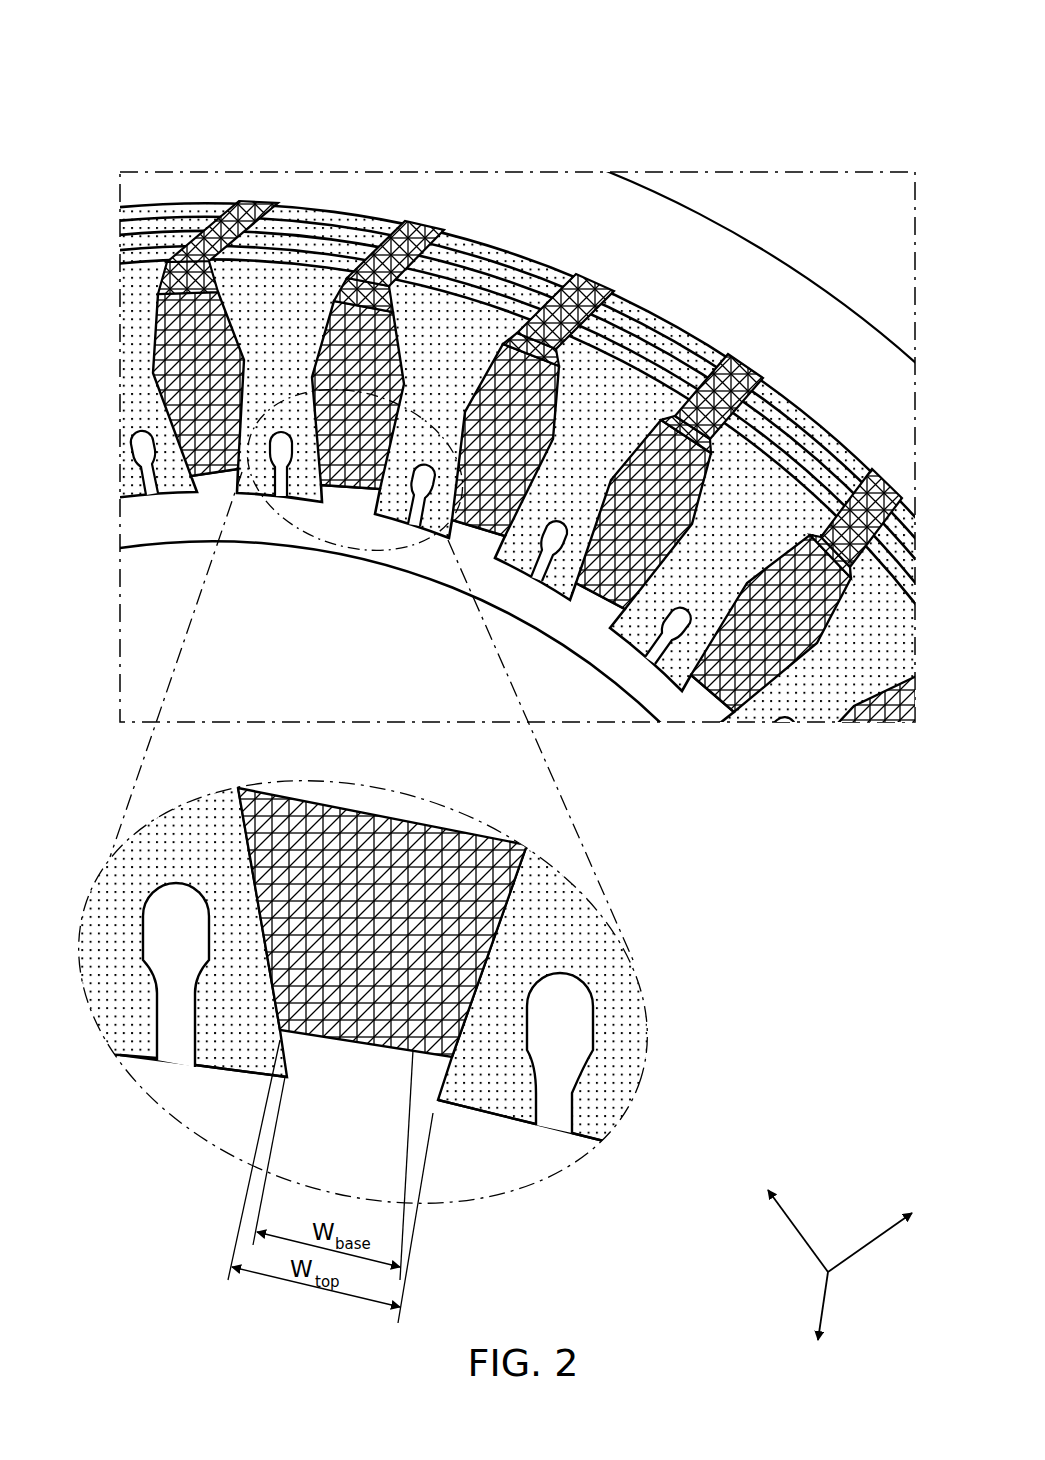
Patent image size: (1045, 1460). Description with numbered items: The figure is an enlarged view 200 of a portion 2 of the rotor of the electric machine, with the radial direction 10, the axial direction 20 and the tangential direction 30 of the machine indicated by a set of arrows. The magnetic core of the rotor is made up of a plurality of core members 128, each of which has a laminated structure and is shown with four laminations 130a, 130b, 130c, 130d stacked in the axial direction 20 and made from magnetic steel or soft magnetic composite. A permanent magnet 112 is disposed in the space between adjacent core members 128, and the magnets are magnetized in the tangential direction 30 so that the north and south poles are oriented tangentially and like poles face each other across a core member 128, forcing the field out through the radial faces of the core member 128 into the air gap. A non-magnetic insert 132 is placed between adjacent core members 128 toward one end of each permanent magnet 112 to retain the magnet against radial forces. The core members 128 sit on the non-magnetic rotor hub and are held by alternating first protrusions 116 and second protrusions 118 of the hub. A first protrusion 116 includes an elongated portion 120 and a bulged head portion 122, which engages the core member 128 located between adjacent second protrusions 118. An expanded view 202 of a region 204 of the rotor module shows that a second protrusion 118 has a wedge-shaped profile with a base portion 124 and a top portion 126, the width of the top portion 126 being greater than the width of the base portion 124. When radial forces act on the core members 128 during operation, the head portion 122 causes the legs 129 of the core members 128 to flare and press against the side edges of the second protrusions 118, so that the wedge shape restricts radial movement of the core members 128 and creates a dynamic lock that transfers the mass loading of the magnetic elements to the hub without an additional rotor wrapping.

The enlarged view 200 is at (830, 60).
The portion 2 is at (840, 170).
The lamination 130a is at (140, 257).
The lamination 130b is at (137, 240).
The lamination 130c is at (157, 227).
The lamination 130d is at (180, 210).
The core member 128 is at (270, 310).
The non-magnetic insert 132 is at (595, 287).
The permanent magnet 112 is at (790, 573).
The first protrusion 116 is at (280, 460).
The region 204 is at (410, 548).
The second protrusion 118 is at (603, 603).
The head portion 122 is at (595, 1012).
The elongated portion 120 is at (585, 1116).
The legs 129 is at (150, 1045).
The base portion 124 is at (287, 1077).
The top portion 126 is at (413, 1052).
The expanded view 202 is at (540, 1190).
The tangential direction 30 is at (790, 1215).
The axial direction 20 is at (888, 1238).
The radial direction 10 is at (818, 1312).